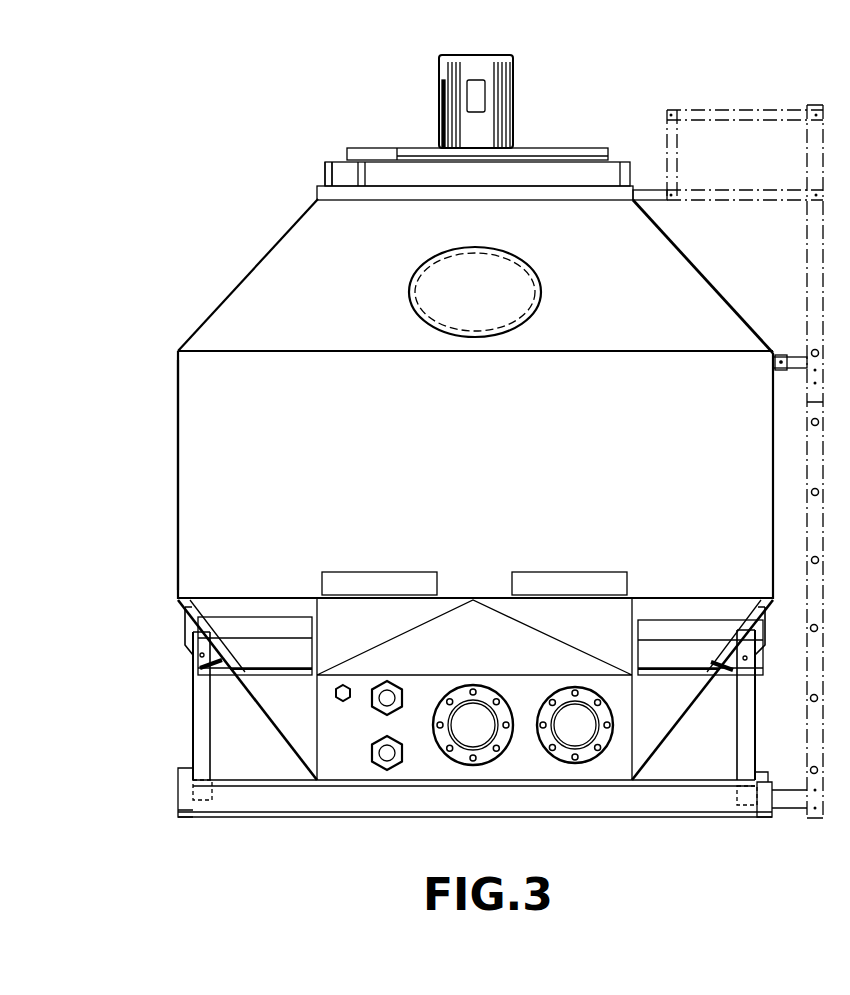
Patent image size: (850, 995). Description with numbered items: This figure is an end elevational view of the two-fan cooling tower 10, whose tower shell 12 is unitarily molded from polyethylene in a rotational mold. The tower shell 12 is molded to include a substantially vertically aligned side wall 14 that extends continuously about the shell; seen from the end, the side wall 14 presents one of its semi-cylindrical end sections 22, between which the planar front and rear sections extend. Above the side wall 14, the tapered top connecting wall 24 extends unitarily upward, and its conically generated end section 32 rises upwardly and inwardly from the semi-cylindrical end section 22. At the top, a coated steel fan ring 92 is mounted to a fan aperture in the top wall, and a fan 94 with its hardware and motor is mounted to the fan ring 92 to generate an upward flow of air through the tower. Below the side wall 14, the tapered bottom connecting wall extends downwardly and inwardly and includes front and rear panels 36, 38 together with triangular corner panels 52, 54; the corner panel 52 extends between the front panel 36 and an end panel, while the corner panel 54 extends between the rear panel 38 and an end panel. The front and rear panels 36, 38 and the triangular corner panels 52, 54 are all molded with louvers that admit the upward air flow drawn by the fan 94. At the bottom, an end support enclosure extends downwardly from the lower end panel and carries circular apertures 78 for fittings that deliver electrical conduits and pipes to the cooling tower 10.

The cooling tower 10 is at (232, 177).
The tower shell 12 is at (173, 228).
The side wall 14 is at (178, 422).
The semi-cylindrical end section 22 is at (188, 490).
The tapered top connecting wall 24 is at (203, 320).
The conically generated end section 32 is at (293, 242).
The front panel 36 is at (223, 665).
The rear panel 38 is at (690, 708).
The triangular corner panel 52 is at (302, 735).
The triangular corner panel 54 is at (647, 742).
The circular apertures 78 is at (493, 748).
The fan ring 92 is at (335, 173).
The fans 94 is at (498, 57).